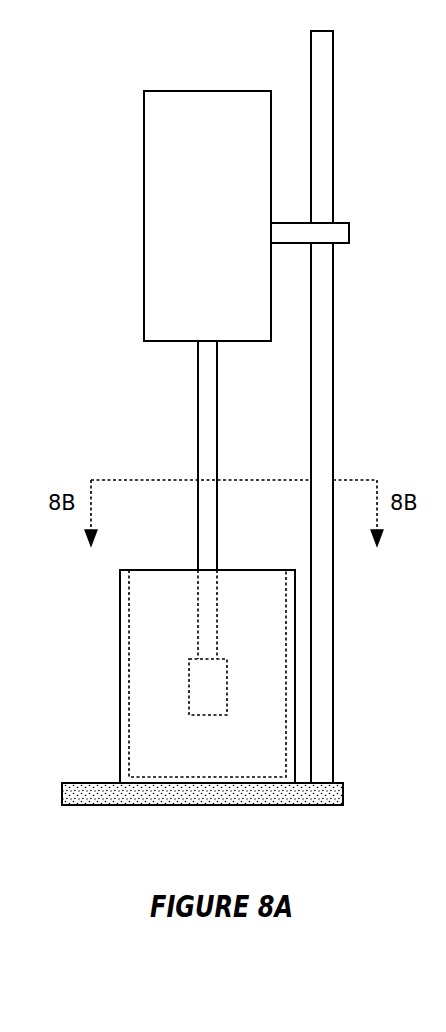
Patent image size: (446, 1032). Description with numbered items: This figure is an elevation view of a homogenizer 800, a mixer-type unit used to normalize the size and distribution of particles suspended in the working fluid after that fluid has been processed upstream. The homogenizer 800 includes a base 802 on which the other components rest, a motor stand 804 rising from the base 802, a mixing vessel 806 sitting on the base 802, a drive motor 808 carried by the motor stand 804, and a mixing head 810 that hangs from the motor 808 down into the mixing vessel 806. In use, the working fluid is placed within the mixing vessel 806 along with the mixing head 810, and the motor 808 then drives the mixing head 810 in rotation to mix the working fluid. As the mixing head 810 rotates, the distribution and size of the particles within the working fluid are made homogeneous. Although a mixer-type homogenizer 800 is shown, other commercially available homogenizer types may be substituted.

The homogenizer 800 is at (128, 77).
The base 802 is at (343, 787).
The motor stand 804 is at (333, 326).
The mixing vessel 806 is at (120, 715).
The drive motor 808 is at (143, 156).
The mixing head 810 is at (189, 672).